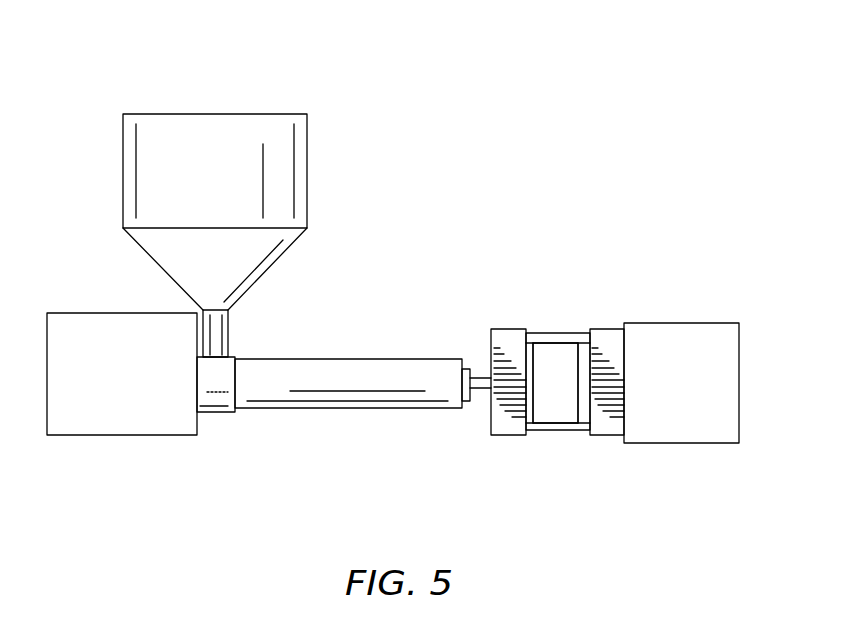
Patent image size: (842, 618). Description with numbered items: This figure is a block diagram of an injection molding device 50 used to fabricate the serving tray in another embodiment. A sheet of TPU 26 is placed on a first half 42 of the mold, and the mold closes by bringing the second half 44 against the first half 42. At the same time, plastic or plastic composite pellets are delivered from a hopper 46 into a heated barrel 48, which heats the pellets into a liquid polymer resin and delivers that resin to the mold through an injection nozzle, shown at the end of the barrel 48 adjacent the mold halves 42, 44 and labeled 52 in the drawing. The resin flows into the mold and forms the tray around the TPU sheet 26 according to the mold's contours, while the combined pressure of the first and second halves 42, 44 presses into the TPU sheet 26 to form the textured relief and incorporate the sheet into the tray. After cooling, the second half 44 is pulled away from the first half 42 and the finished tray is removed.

The sheet of TPU 26 is at (576, 408).
The first half of the mold 42 is at (583, 333).
The second half of the mold 44 is at (531, 333).
The hopper 46 is at (296, 170).
The heated barrel 48 is at (290, 408).
The injection molding device 50 is at (567, 153).
The nozzle 52 is at (473, 372).